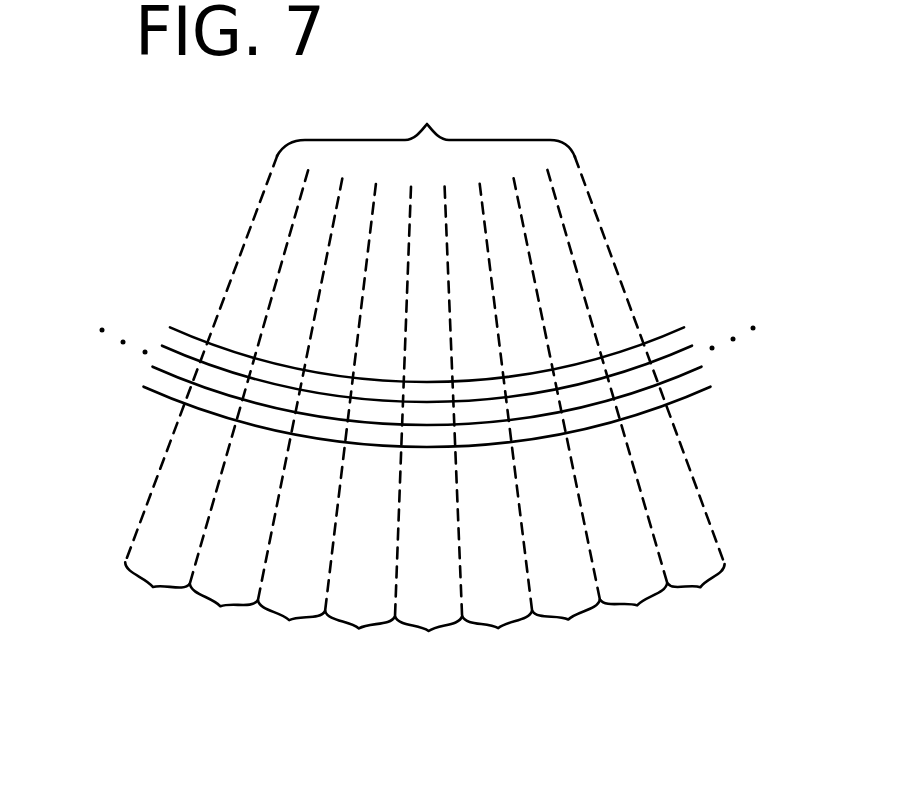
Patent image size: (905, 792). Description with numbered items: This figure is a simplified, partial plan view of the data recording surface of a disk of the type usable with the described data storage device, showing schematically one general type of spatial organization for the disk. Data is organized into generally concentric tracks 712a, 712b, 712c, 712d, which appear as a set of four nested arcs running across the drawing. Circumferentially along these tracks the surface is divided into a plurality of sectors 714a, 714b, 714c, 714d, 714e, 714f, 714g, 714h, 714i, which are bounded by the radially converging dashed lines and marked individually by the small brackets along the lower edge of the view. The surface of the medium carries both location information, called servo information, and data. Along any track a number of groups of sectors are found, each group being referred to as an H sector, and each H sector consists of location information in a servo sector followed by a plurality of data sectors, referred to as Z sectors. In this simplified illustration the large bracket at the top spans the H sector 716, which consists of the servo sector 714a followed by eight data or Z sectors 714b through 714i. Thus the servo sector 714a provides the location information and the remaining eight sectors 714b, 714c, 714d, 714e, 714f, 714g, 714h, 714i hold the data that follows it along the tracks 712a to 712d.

The H sector 716 is at (427, 125).
The concentric track 712a is at (243, 355).
The concentric track 712b is at (228, 371).
The concentric track 712c is at (213, 391).
The concentric track 712d is at (215, 414).
The servo sector 714a is at (153, 589).
The data sector 714b is at (220, 608).
The data sector 714c is at (289, 621).
The data sector 714d is at (359, 629).
The data sector 714e is at (429, 631).
The data sector 714f is at (498, 628).
The data sector 714g is at (568, 620).
The data sector 714h is at (637, 605).
The data sector 714i is at (700, 587).